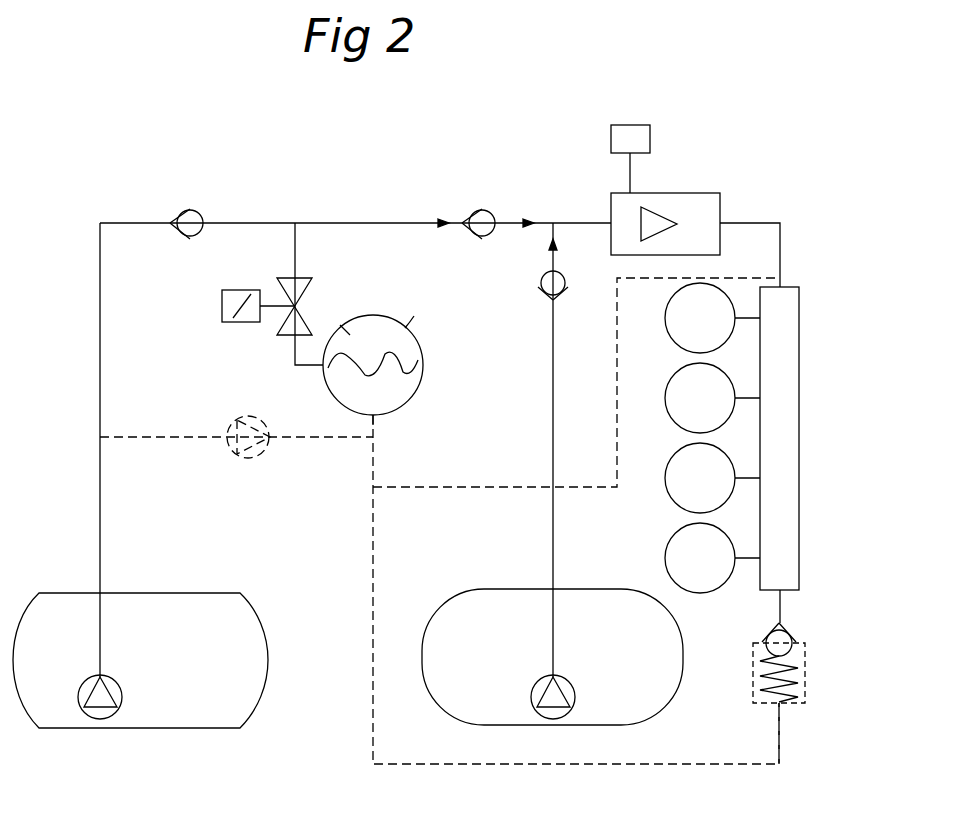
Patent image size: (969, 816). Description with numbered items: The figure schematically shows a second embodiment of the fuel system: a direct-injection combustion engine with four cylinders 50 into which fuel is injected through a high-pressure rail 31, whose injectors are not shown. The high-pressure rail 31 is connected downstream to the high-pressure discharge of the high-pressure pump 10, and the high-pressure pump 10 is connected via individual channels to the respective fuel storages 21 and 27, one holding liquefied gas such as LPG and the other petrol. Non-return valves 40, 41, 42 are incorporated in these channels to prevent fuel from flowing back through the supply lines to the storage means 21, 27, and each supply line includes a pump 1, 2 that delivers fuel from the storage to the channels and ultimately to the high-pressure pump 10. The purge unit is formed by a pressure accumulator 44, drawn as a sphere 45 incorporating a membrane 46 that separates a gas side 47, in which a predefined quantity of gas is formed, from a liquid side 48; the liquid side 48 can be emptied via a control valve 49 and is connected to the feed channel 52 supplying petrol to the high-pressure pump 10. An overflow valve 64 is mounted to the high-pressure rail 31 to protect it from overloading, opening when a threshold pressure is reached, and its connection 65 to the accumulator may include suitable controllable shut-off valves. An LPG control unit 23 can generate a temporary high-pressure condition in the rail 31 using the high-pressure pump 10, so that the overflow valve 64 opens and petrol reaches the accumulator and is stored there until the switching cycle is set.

The pump 1 is at (561, 720).
The pump 2 is at (107, 720).
The high-pressure pump 10 is at (700, 203).
The fuel storage 21 is at (510, 600).
The LPG control unit 23 is at (650, 135).
The fuel storage 27 is at (190, 606).
The high-pressure rail 31 is at (806, 400).
The non-return valve 40 is at (191, 211).
The non-return valve 41 is at (483, 211).
The non-return valve 42 is at (553, 285).
The pressure accumulator 44 is at (385, 316).
The sphere 45 is at (407, 333).
The membrane 46 is at (392, 356).
The gas side 47 is at (360, 320).
The liquid side 48 is at (388, 395).
The control valve 49 is at (253, 331).
The cylinders 50 is at (681, 326).
The feed channel 52 is at (312, 223).
The overflow valve 64 is at (790, 625).
The connection 65 is at (780, 748).